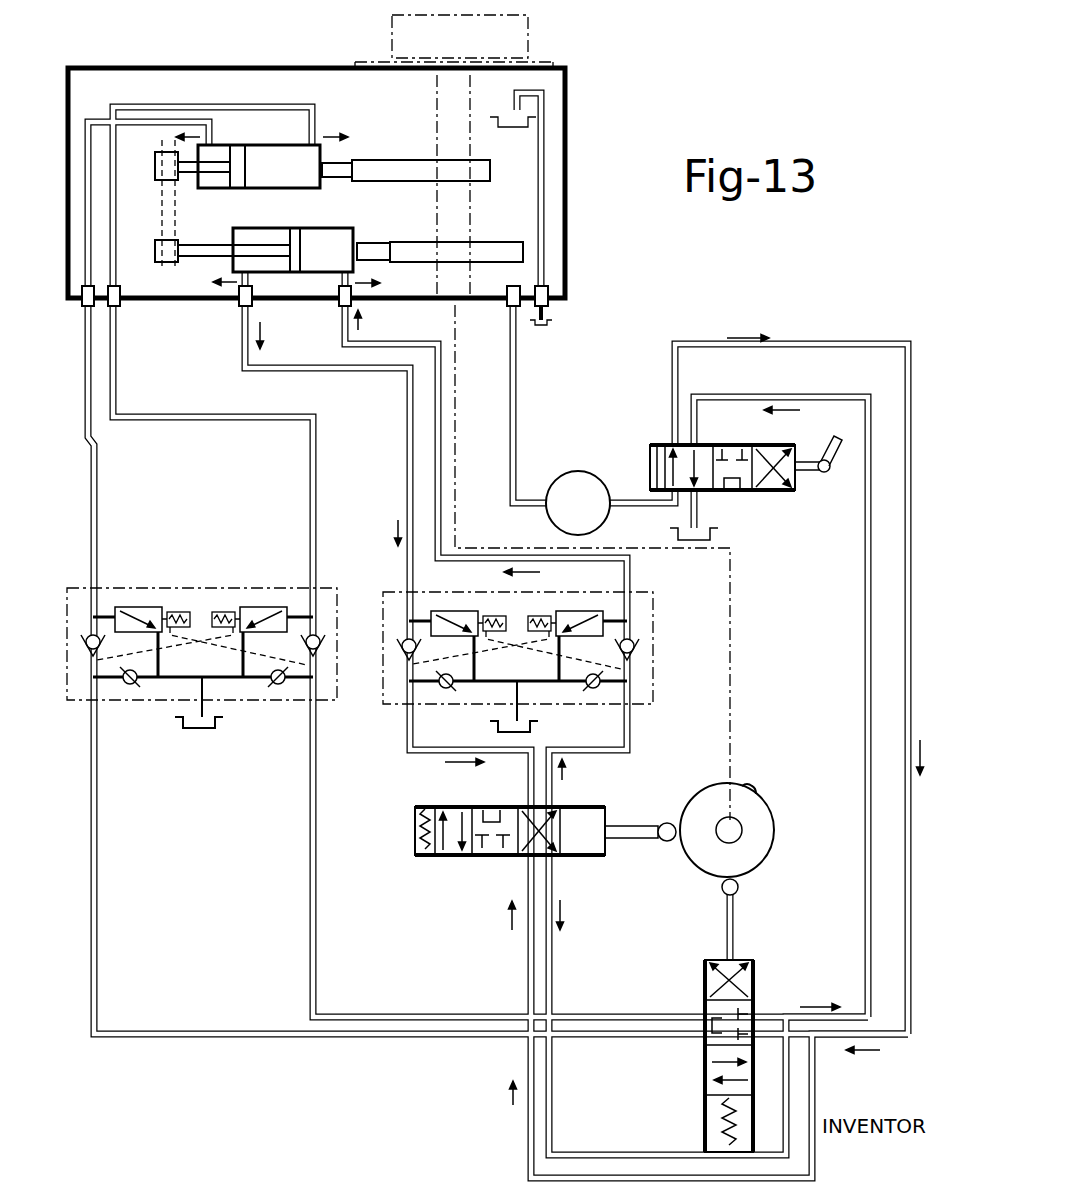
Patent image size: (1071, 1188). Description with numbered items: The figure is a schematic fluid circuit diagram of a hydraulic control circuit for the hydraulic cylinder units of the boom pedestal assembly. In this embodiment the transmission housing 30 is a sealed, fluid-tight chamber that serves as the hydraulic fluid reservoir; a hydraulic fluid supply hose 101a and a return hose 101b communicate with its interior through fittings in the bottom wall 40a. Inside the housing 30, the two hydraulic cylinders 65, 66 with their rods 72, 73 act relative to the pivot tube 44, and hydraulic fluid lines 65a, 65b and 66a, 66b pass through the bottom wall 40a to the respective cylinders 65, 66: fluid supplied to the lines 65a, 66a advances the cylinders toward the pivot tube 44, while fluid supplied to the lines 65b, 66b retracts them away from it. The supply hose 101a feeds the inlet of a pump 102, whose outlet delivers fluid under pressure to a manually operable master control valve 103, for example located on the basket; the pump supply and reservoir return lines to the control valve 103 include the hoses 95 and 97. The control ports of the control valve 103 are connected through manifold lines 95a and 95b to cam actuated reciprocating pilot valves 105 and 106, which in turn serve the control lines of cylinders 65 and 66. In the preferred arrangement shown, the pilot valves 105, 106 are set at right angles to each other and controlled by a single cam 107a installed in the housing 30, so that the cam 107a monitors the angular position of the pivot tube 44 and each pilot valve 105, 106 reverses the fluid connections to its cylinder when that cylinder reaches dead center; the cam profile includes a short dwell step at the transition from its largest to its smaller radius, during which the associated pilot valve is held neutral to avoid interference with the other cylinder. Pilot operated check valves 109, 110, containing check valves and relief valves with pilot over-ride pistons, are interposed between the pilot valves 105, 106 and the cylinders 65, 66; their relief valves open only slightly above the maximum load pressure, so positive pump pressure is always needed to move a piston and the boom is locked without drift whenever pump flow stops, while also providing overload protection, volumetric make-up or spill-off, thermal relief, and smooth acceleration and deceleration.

The transmission housing 30 is at (250, 68).
The pivot tube 44 is at (437, 103).
The hydraulic cylinder 65 is at (285, 145).
The hydraulic cylinder 66 is at (262, 228).
The actuating rod 72 is at (420, 160).
The actuating rod 73 is at (485, 243).
The hydraulic fluid line 65a is at (97, 478).
The hydraulic fluid line 65b is at (118, 357).
The hydraulic fluid line 66a is at (300, 364).
The hydraulic fluid line 66b is at (403, 330).
The bottom wall 40a is at (504, 306).
The hydraulic fluid supply hose 101a is at (518, 373).
The hydraulic fluid return hose 101b is at (548, 313).
The pump 102 is at (578, 471).
The hose 95 is at (627, 500).
The manifold line 95a is at (868, 722).
The manifold line 95b is at (912, 365).
The hose 97 is at (699, 508).
The master control valve 103 is at (772, 492).
The pilot operated check valve 109 is at (128, 702).
The pilot operated check valve 110 is at (653, 670).
The pilot valve 106 is at (478, 855).
The cam 107a is at (700, 792).
The pilot valve 105 is at (705, 983).